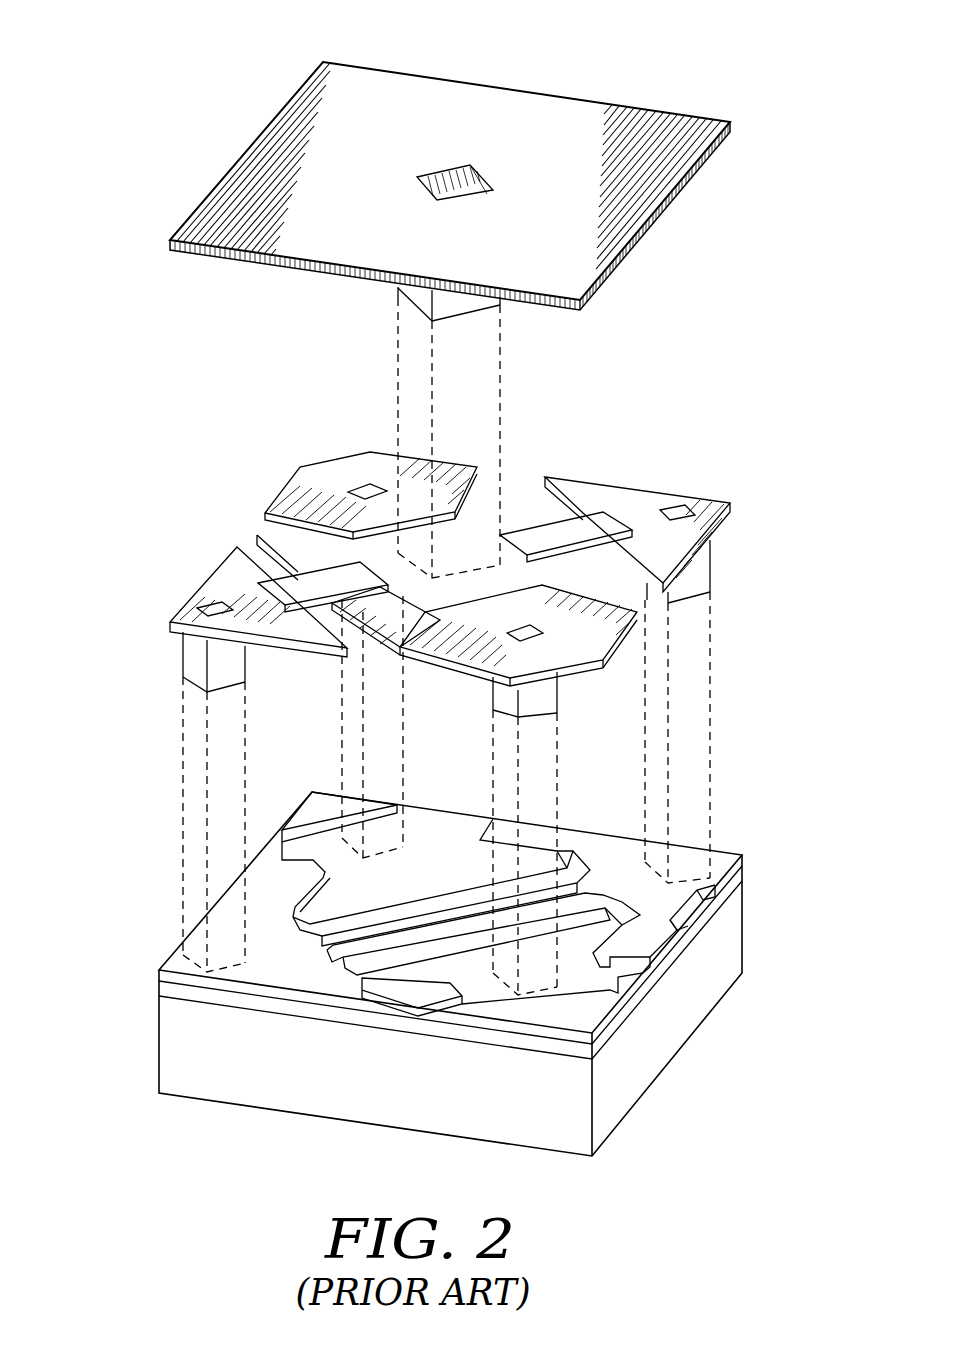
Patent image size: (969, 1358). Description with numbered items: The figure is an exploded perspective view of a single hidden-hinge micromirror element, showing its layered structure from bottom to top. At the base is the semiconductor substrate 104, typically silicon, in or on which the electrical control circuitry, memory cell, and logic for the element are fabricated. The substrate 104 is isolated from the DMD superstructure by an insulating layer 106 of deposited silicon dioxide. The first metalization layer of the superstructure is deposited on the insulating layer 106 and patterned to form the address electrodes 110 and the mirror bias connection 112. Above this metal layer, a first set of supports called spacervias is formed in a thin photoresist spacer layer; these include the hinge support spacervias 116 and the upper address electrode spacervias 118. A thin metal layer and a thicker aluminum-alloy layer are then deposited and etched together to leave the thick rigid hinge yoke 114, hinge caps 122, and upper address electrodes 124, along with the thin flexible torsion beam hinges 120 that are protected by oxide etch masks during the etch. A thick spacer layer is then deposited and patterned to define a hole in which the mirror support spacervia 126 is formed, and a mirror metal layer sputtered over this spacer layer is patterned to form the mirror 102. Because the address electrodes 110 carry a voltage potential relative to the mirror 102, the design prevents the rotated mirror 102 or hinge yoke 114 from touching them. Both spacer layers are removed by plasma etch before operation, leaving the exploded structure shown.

The mirror 102 is at (418, 95).
The substrate 104 is at (660, 1030).
The insulating layer 106 is at (165, 1000).
The address electrodes 110 is at (318, 830).
The mirror bias connection 112 is at (285, 965).
The hinge yoke 114 is at (425, 555).
The hinge support spacervias 116 is at (190, 655).
The upper address electrode spacervias 118 is at (545, 689).
The hinges 120 is at (285, 532).
The hinge cap 122 is at (225, 580).
The upper address electrodes 124 is at (360, 466).
The mirror support spacervia 126 is at (460, 302).